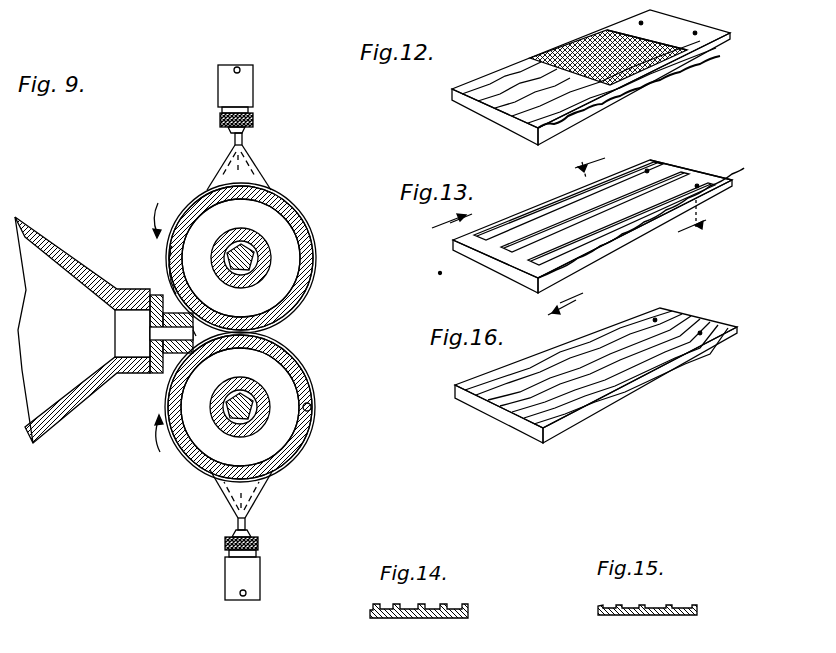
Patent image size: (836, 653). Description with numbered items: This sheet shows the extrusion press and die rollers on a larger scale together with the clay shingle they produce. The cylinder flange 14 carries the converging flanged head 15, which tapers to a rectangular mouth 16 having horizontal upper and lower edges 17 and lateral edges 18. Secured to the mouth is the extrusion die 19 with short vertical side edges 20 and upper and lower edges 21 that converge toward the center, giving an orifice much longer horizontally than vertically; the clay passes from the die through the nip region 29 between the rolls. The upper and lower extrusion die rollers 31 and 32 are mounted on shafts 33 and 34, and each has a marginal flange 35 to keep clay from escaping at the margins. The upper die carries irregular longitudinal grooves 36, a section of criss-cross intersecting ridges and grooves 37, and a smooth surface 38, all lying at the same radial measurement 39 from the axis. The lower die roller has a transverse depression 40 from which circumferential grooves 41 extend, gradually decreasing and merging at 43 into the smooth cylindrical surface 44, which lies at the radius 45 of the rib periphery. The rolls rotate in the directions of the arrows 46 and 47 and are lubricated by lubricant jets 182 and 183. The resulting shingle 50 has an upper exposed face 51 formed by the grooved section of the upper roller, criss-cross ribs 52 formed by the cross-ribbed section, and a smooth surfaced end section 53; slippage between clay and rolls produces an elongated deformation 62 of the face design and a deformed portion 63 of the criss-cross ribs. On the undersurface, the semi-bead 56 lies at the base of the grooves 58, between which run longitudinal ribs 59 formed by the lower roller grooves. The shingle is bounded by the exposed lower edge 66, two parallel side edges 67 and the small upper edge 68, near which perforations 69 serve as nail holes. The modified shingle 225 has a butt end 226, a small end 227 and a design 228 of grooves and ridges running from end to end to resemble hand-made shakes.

In FIG. 9, the converging flanged head 15 is at (76, 270).
In FIG. 13, the converging flanged head 15 is at (631, 204).
In FIG. 9, the rectangular mouth 16 is at (140, 372).
In FIG. 9, the horizontal upper and lower edges 17 is at (135, 358).
In FIG. 9, the lateral edges 18 is at (120, 318).
In FIG. 9, the extrusion die 19 is at (160, 300).
In FIG. 9, the vertical side edges 20 is at (170, 333).
In FIG. 9, the upper and lower edges 21 is at (158, 366).
In FIG. 9, the nip 29 is at (203, 333).
In FIG. 9, the upper extrusion die roller 31 is at (284, 194).
In FIG. 9, the lower extrusion die roller 32 is at (314, 360).
In FIG. 9, the shaft 33 is at (256, 265).
In FIG. 9, the shaft 34 is at (247, 420).
In FIG. 9, the marginal flange 35 is at (315, 243).
In FIG. 9, the longitudinal grooves 36 is at (300, 213).
In FIG. 9, the criss-cross intersecting ridges and grooves 37 is at (190, 205).
In FIG. 9, the smooth surface 38 is at (314, 271).
In FIG. 9, the radial measurement 39 is at (240, 242).
In FIG. 9, the transverse depression 40 is at (309, 405).
In FIG. 9, the circumferential grooves 41 is at (297, 440).
In FIG. 9, the merging point 43 is at (286, 345).
In FIG. 9, the smooth cylindrical surface 44 is at (306, 383).
In FIG. 9, the radius 45 is at (251, 402).
In FIG. 9, the arrow 46 is at (150, 220).
In FIG. 9, the arrow 47 is at (153, 438).
In FIG. 9, the lubricant jet 182 is at (242, 96).
In FIG. 9, the lubricant jet 183 is at (240, 568).
In FIG. 12, the shingle 50 is at (455, 80).
In FIG. 13, the shingle 50 is at (640, 166).
In FIG. 14, the shingle 50 is at (474, 600).
In FIG. 15, the shingle 50 is at (692, 596).
In FIG. 12, the upper or exposed face 51 is at (500, 76).
In FIG. 14, the upper or exposed face 51 is at (450, 618).
In FIG. 12, the criss-cross ribs 52 is at (580, 42).
In FIG. 15, the smooth surfaced end section 53 is at (680, 615).
In FIG. 13, the semi-bead 56 is at (462, 252).
In FIG. 13, the grooves 58 is at (525, 222).
In FIG. 14, the grooves 58 is at (387, 609).
In FIG. 15, the grooves 58 is at (612, 605).
In FIG. 13, the longitudinal ribs 59 is at (555, 217).
In FIG. 14, the longitudinal ribs 59 is at (435, 608).
In FIG. 15, the longitudinal ribs 59 is at (648, 606).
In FIG. 12, the elongated deformation 62 is at (540, 71).
In FIG. 12, the deformed portion 63 is at (641, 23).
In FIG. 12, the exposed lower edge 66 is at (478, 108).
In FIG. 13, the exposed lower edge 66 is at (500, 270).
In FIG. 12, the side edges 67 is at (634, 89).
In FIG. 13, the side edges 67 is at (628, 240).
In FIG. 14, the side edges 67 is at (468, 611).
In FIG. 15, the side edges 67 is at (698, 608).
In FIG. 12, the small upper edge 68 is at (697, 26).
In FIG. 13, the small upper edge 68 is at (705, 174).
In FIG. 12, the perforations 69 is at (696, 32).
In FIG. 13, the perforations 69 is at (651, 169).
In FIG. 13, the flange 14 is at (498, 271).
In FIG. 16, the modified shingle 225 is at (650, 392).
In FIG. 16, the butt end 226 is at (516, 423).
In FIG. 16, the small end 227 is at (702, 331).
In FIG. 16, the design 228 is at (510, 392).